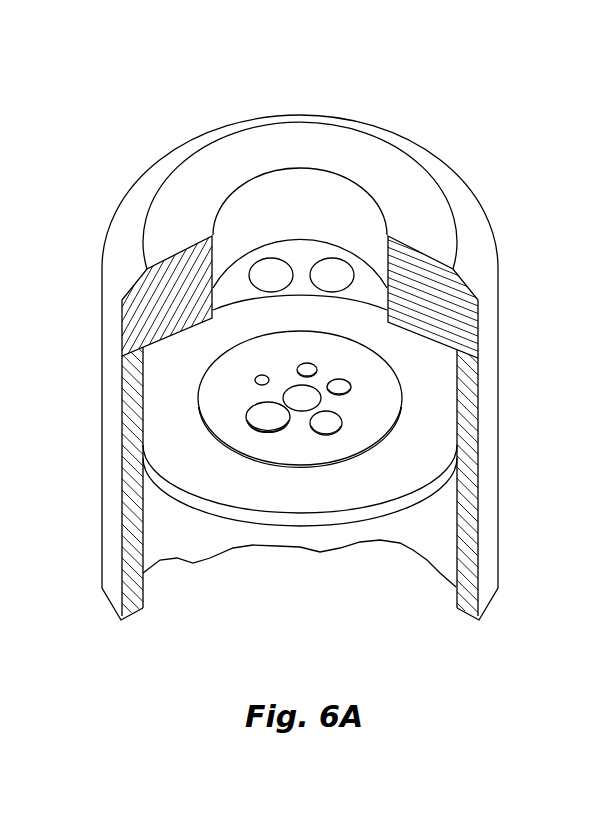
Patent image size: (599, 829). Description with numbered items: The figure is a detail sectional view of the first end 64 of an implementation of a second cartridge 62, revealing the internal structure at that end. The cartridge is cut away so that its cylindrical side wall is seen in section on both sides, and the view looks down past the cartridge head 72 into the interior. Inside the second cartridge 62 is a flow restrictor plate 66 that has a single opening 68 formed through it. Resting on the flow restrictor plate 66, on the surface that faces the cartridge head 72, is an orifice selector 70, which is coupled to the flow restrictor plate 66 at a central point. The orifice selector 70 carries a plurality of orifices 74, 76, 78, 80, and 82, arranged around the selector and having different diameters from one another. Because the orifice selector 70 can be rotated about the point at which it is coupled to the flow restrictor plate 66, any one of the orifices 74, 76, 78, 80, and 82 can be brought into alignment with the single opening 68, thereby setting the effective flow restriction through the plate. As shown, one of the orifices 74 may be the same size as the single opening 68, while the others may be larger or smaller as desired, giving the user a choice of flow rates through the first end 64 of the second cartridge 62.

The second cartridge 62 is at (103, 112).
The first end 64 is at (130, 372).
The flow restrictor plate 66 is at (192, 462).
The single opening 68 is at (265, 428).
The orifice selector 70 is at (372, 414).
The cartridge head 72 is at (435, 212).
The orifice 74 is at (248, 411).
The orifice 76 is at (328, 434).
The orifice 78 is at (350, 386).
The orifice 80 is at (314, 367).
The orifice 82 is at (256, 378).